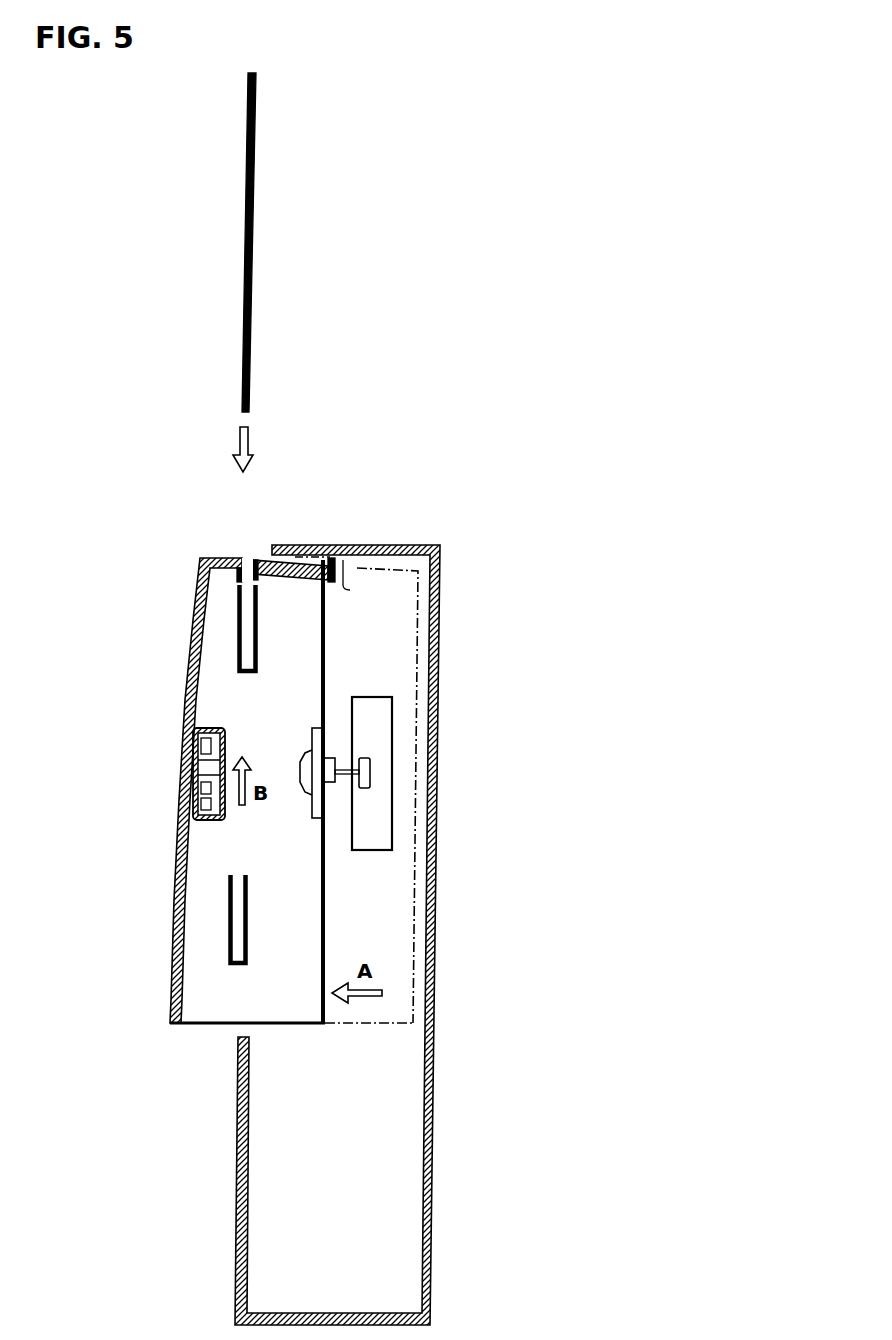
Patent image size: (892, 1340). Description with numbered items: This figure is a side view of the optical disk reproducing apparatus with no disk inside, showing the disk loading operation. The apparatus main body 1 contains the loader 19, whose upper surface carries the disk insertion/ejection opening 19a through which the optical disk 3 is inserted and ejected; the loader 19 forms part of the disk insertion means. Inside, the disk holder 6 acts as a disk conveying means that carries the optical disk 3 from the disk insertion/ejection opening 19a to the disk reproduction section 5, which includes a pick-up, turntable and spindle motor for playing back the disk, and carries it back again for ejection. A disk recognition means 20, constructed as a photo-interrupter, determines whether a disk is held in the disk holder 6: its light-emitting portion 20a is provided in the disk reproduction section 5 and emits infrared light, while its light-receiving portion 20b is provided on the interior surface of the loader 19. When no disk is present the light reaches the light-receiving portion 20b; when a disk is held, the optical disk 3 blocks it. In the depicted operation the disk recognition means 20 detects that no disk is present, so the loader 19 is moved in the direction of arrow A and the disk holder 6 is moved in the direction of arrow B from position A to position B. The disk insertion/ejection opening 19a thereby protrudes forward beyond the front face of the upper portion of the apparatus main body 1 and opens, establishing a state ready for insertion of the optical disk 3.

The apparatus main body 1 is at (440, 627).
The optical disk 3 is at (256, 222).
The disk reproduction section 5 is at (392, 778).
The disk holder 6 is at (237, 640).
The loader 19 is at (182, 867).
The disk insertion/ejection opening 19a is at (255, 558).
The disk recognition means 20 is at (470, 724).
The light-emitting portion 20a is at (372, 768).
The light-receiving portion 20b is at (200, 800).